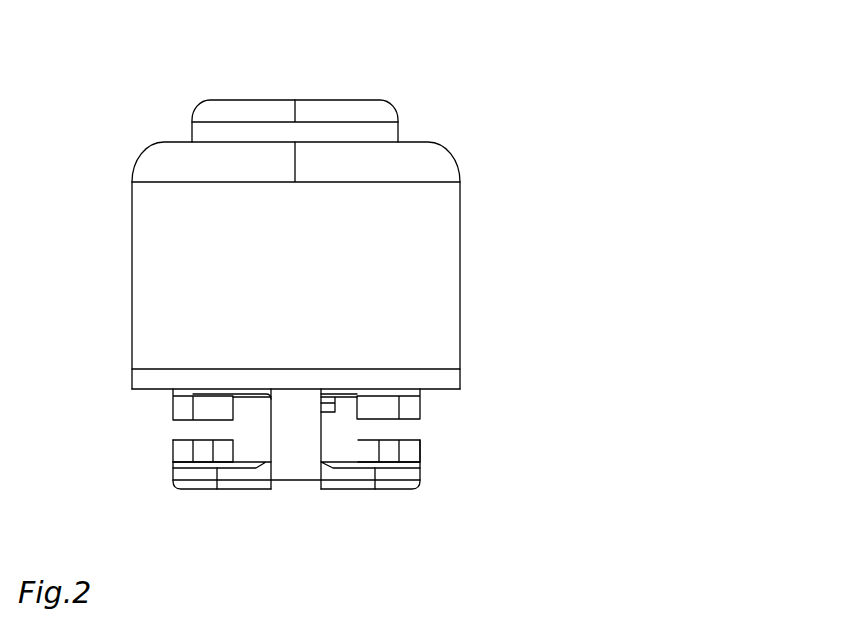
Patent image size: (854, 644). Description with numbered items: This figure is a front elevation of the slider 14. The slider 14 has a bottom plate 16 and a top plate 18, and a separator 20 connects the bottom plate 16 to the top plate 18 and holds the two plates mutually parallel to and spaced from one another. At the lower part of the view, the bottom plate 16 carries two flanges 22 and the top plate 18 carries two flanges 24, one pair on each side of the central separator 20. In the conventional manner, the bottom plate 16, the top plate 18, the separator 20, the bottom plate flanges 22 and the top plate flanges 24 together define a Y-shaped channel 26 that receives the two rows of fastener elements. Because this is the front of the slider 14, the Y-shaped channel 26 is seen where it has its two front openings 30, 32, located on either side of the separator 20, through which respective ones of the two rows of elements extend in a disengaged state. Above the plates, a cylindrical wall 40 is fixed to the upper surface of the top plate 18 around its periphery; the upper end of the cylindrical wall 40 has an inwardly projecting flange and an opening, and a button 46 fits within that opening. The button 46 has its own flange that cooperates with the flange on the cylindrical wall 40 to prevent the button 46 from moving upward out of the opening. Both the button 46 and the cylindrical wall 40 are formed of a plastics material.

The slider 14 is at (357, 195).
The button 46 is at (313, 98).
The cylindrical wall 40 is at (460, 244).
The top plate 18 is at (460, 379).
The separator 20 is at (290, 442).
The top plate flanges 24 is at (173, 411).
The bottom plate flanges 22 is at (173, 450).
The Y-shaped channel 26 is at (250, 433).
The front opening 32 is at (259, 447).
The front opening 30 is at (348, 449).
The bottom plate 16 is at (358, 472).